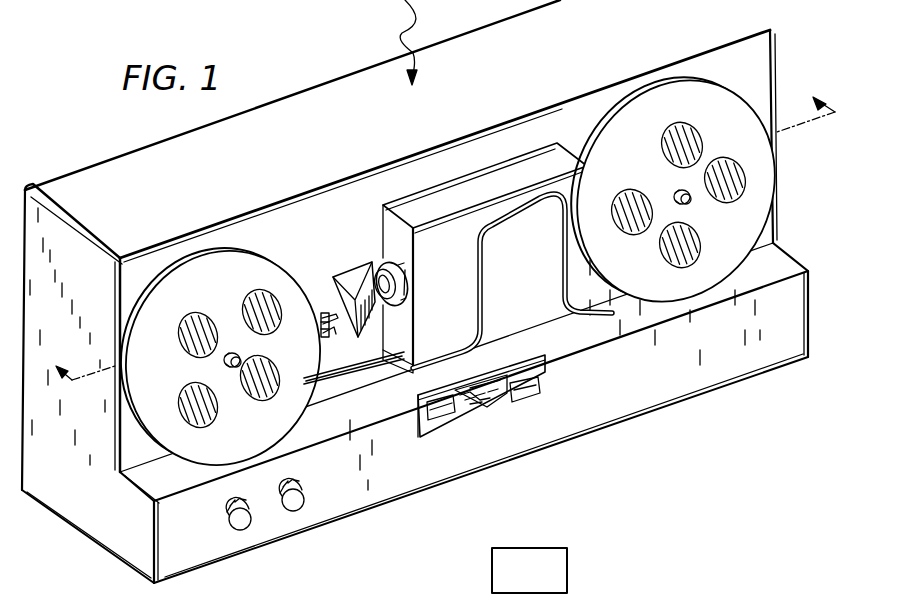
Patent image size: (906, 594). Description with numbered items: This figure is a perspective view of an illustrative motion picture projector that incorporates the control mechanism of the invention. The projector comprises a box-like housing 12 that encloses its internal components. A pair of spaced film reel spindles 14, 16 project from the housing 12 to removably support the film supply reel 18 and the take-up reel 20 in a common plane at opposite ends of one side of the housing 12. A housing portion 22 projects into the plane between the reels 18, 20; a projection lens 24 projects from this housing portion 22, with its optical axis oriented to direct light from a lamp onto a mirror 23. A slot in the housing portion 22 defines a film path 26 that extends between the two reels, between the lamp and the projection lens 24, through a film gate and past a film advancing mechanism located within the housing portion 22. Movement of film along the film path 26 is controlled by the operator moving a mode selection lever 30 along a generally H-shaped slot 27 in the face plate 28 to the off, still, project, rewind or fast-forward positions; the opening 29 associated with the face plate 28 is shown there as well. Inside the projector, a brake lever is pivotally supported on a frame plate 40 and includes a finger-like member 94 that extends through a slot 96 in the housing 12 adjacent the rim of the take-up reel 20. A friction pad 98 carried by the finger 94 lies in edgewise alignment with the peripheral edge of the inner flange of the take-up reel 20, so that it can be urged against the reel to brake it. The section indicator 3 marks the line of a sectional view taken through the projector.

The section line 3- 3 is at (437, 228).
The housing 12 is at (760, 70).
The film reel spindle 14 is at (690, 204).
The film reel spindle 16 is at (236, 370).
The film supply reel 18 is at (752, 200).
The take-up reel 20 is at (258, 420).
The housing portion 22 is at (507, 180).
The mirror 23 is at (367, 262).
The projection lens 24 is at (400, 302).
The film path 26 is at (478, 310).
The slot 27 is at (523, 395).
The face plate 28 is at (549, 369).
The central slot 29 is at (483, 385).
The mode selection lever 30 is at (486, 410).
The frame plate 40 is at (575, 571).
The finger-like member 94 is at (328, 333).
The slot 96 is at (323, 312).
The friction pad 98 is at (322, 320).